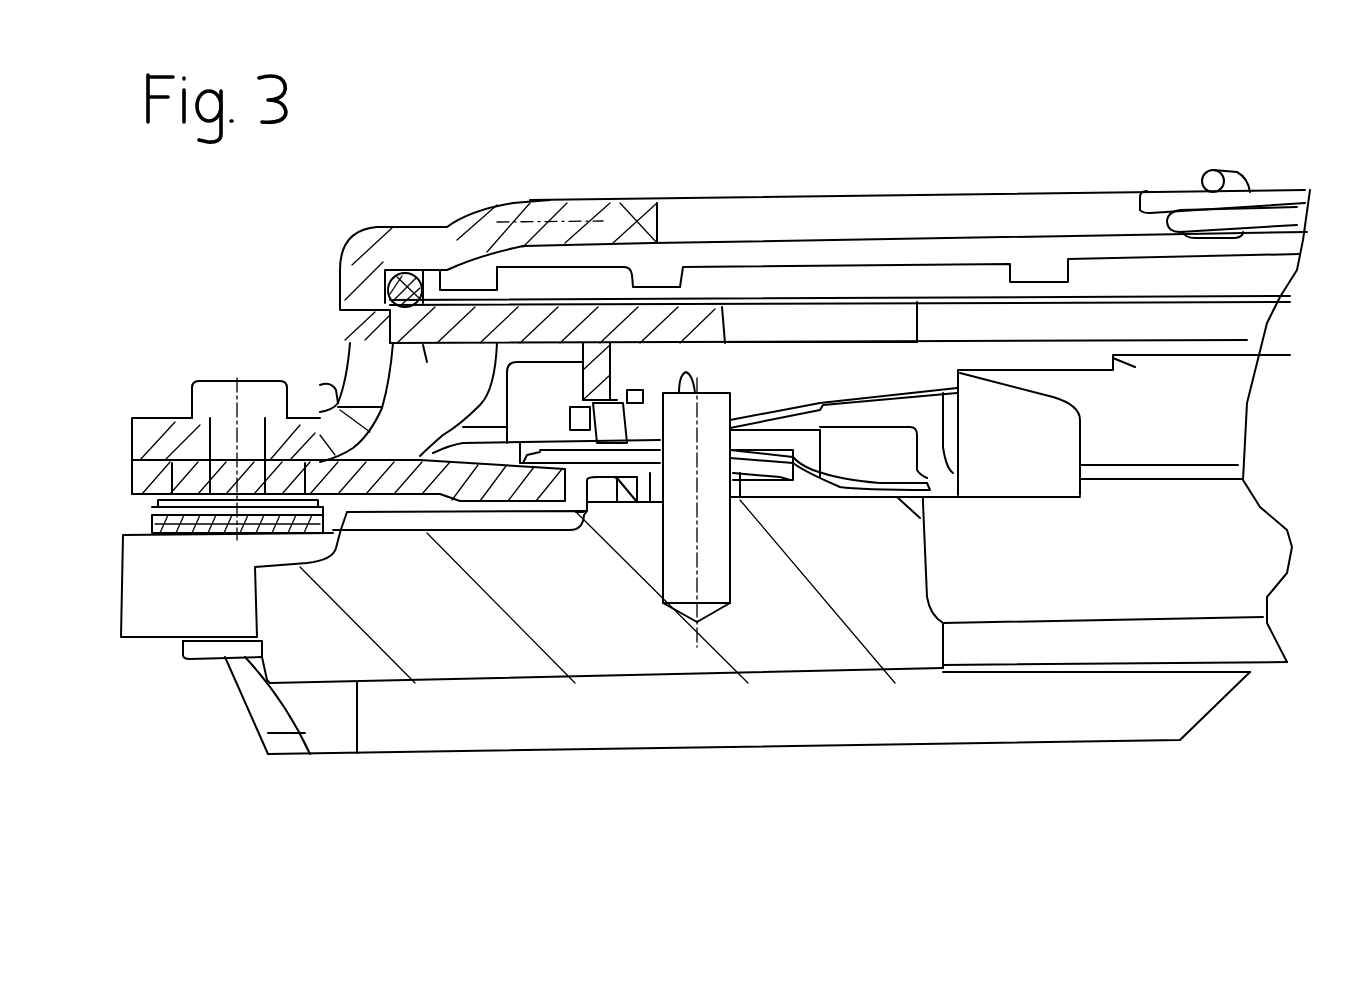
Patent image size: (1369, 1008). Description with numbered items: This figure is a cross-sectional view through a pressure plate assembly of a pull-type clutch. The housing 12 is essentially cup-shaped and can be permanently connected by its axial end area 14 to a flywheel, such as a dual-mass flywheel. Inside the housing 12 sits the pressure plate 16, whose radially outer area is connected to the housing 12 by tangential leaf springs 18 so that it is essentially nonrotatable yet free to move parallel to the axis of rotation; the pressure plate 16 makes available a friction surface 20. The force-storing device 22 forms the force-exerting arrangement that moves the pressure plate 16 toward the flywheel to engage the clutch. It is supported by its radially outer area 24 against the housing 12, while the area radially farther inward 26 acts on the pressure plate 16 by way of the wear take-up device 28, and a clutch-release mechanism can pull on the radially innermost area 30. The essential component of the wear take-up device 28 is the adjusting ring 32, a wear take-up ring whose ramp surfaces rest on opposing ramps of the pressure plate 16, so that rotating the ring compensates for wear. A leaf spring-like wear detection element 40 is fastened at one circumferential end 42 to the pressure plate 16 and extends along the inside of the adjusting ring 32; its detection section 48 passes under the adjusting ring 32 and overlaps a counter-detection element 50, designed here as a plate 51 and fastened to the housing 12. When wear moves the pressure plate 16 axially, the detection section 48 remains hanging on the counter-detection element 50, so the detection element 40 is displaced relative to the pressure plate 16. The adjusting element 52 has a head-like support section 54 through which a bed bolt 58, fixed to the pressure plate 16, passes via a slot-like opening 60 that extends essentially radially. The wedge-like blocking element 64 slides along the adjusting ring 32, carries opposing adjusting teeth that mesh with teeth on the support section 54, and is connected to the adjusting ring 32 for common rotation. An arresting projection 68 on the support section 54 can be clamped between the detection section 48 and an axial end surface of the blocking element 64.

The housing 12 is at (554, 200).
The axial end area 14 is at (272, 754).
The pressure plate 16 is at (1100, 647).
The tangential leaf springs 18 is at (150, 515).
The friction surface 20 is at (1020, 667).
The force-storing device 22 is at (1093, 297).
The radially outer area 24 is at (421, 268).
The area radially farther inward 26 is at (595, 345).
The wear take-up device 28 is at (789, 334).
The radially innermost area 30 is at (1247, 323).
The adjusting ring 32 is at (857, 363).
The wear detection element 40 is at (797, 481).
The circumferential end 42 is at (960, 483).
The detection section 48 is at (585, 513).
The counter-detection element 50 is at (335, 533).
The plate 51 is at (453, 490).
The adjusting element 52 is at (620, 505).
The head-like support section 54 is at (750, 498).
The bed bolt 58 is at (715, 403).
The slot-like opening 60 is at (650, 505).
The wedge-like blocking element 64 is at (590, 452).
The arresting projection 68 is at (648, 392).